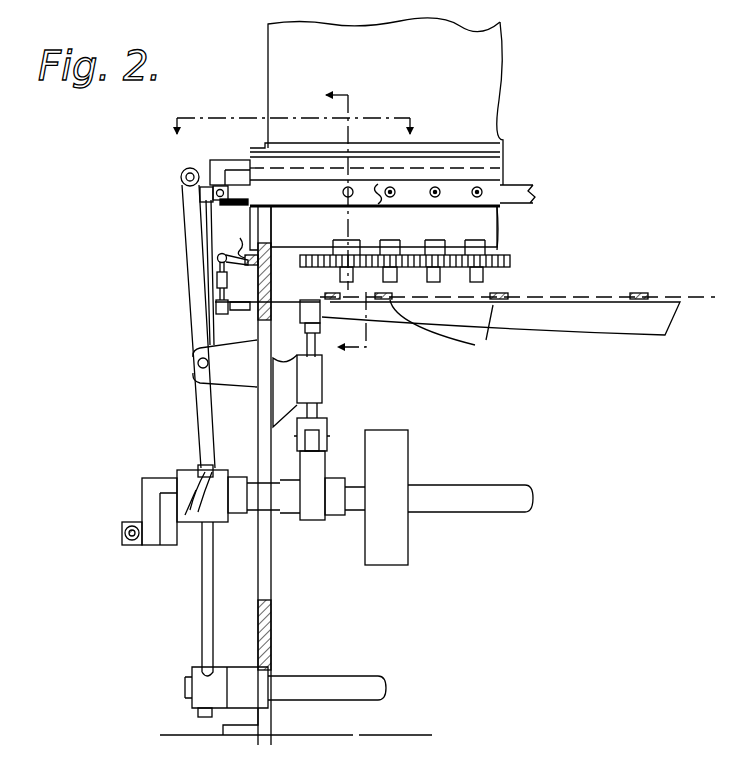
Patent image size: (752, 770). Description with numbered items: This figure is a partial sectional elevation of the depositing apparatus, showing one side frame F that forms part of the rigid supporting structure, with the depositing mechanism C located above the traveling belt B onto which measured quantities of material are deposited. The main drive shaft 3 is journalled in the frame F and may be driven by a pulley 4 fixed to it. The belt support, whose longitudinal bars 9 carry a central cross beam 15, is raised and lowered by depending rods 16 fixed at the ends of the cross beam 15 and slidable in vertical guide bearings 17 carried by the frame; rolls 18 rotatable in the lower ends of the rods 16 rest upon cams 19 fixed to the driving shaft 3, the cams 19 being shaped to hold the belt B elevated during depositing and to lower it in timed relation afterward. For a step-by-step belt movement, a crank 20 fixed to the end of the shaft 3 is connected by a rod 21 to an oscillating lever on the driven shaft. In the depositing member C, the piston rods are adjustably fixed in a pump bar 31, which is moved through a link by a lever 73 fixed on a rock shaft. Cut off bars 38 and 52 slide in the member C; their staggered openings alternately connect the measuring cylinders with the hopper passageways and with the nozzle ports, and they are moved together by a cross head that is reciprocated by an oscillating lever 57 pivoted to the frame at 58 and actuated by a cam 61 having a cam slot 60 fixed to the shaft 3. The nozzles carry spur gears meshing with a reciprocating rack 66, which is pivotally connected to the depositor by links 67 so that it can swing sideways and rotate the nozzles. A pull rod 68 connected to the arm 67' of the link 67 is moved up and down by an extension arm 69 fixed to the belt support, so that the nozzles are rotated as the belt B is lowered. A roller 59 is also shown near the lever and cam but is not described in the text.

The main drive shaft 3 is at (460, 518).
The pulley 4 is at (430, 460).
The longitudinal bars 9 is at (441, 331).
The central cross beam 15 is at (501, 318).
The depending rods 16 is at (306, 340).
The vertical guide bearings 17 is at (322, 385).
The rolls 18 is at (312, 443).
The cams 19 is at (310, 515).
The crank 20 is at (158, 493).
The rod 21 is at (125, 540).
The pump bar 31 is at (536, 196).
The cut off bar 38 is at (213, 160).
The cut off bar 52 is at (205, 203).
The oscillating lever 57 is at (195, 240).
The pivot 58 is at (195, 364).
The roller 59 is at (200, 472).
The cam slot 60 is at (200, 516).
The cam 61 is at (185, 515).
The reciprocating rack 66 is at (512, 262).
The links 67 is at (236, 239).
The arm 67' is at (204, 260).
The pull rod 68 is at (218, 290).
The extension arm 69 is at (242, 305).
The lever 73 is at (208, 630).
The traveling belt B is at (590, 297).
The depositing mechanism C is at (385, 134).
The side frame F is at (272, 628).